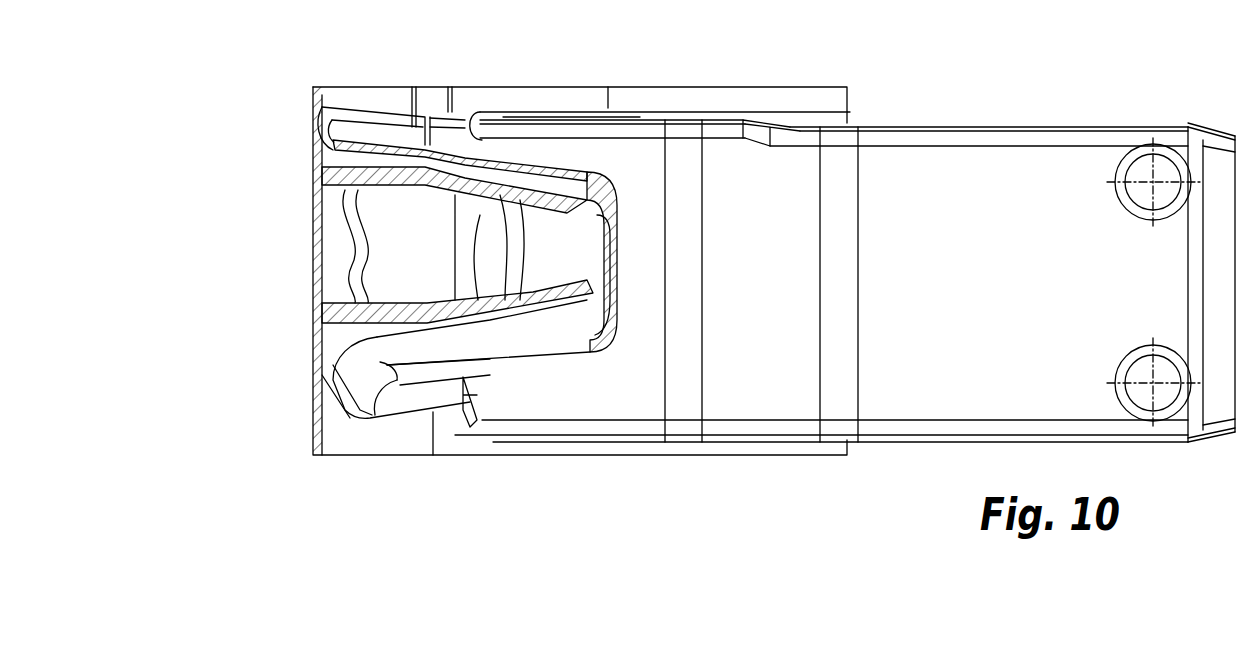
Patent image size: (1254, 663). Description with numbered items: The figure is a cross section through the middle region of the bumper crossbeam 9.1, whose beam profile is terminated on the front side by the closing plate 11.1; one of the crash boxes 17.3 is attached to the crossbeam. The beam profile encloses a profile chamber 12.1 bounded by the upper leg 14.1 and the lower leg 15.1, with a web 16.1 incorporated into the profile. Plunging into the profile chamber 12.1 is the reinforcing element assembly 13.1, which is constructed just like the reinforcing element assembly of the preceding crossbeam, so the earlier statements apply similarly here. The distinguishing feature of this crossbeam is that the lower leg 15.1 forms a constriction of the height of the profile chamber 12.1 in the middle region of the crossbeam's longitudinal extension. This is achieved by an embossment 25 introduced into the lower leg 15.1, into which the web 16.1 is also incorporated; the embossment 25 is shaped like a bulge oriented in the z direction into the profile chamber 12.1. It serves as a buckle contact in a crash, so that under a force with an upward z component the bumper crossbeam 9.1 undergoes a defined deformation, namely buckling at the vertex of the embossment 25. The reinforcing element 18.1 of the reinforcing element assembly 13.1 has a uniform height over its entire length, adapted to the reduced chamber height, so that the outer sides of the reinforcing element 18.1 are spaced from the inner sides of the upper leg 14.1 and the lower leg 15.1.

The bumper crossbeam 9.1 is at (281, 93).
The closing plate 11.1 is at (310, 330).
The profile chamber 12.1 is at (586, 188).
The reinforcing element assembly 13.1 is at (402, 156).
The upper leg 14.1 is at (537, 156).
The lower leg 15.1 is at (533, 345).
The web 16.1 is at (621, 260).
The crash box 17.3 is at (1097, 124).
The reinforcing element 18.1 is at (597, 205).
The embossment 25 is at (377, 366).